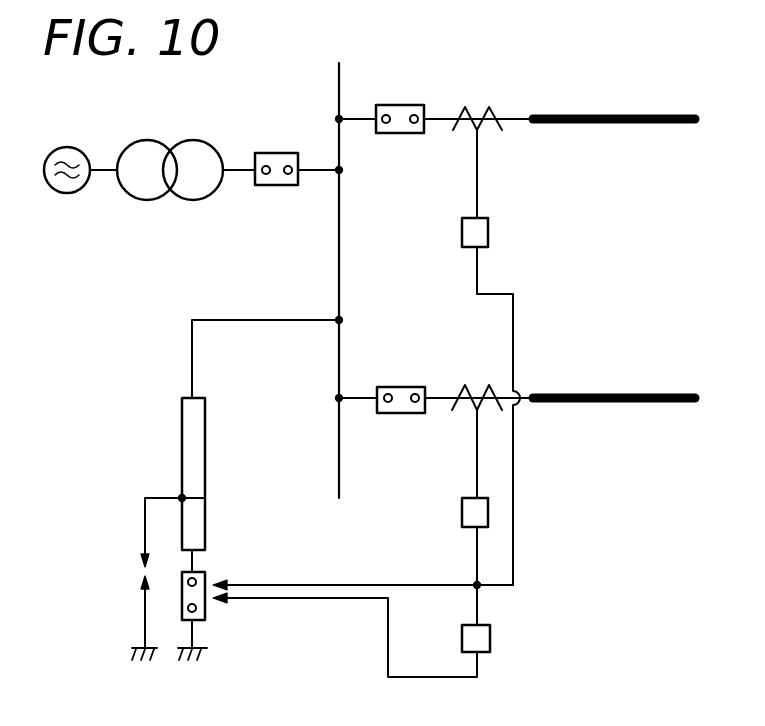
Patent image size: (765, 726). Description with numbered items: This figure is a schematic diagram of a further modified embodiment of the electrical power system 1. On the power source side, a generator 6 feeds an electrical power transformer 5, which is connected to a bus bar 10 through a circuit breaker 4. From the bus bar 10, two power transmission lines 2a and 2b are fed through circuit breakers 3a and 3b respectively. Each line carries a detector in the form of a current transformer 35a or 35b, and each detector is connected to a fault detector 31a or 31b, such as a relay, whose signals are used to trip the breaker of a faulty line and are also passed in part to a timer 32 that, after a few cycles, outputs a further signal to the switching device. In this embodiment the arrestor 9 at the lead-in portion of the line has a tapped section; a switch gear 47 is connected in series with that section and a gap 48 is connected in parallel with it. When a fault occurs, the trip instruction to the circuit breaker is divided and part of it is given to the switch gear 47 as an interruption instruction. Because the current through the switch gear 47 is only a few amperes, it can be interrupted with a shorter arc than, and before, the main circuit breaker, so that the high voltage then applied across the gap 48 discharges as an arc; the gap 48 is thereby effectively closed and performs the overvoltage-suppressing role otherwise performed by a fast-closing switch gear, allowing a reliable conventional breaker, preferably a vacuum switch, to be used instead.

The electrical power system 1 is at (318, 273).
The power transmission line 2a is at (618, 115).
The power transmission line 2b is at (628, 393).
The circuit breaker 3a is at (411, 105).
The circuit breaker 3b is at (393, 387).
The circuit breaker 4 is at (266, 186).
The electrical power transformer 5 is at (165, 145).
The generator 6 is at (73, 146).
The arrestor 9 is at (205, 445).
The bus bar 10 is at (338, 95).
The fault detector 31a is at (488, 232).
The fault detector 31b is at (462, 512).
The timer 32 is at (490, 632).
The detector 35a is at (478, 110).
The current transformer 35b is at (476, 385).
The switch gear 47 is at (205, 613).
The gap 48 is at (138, 572).